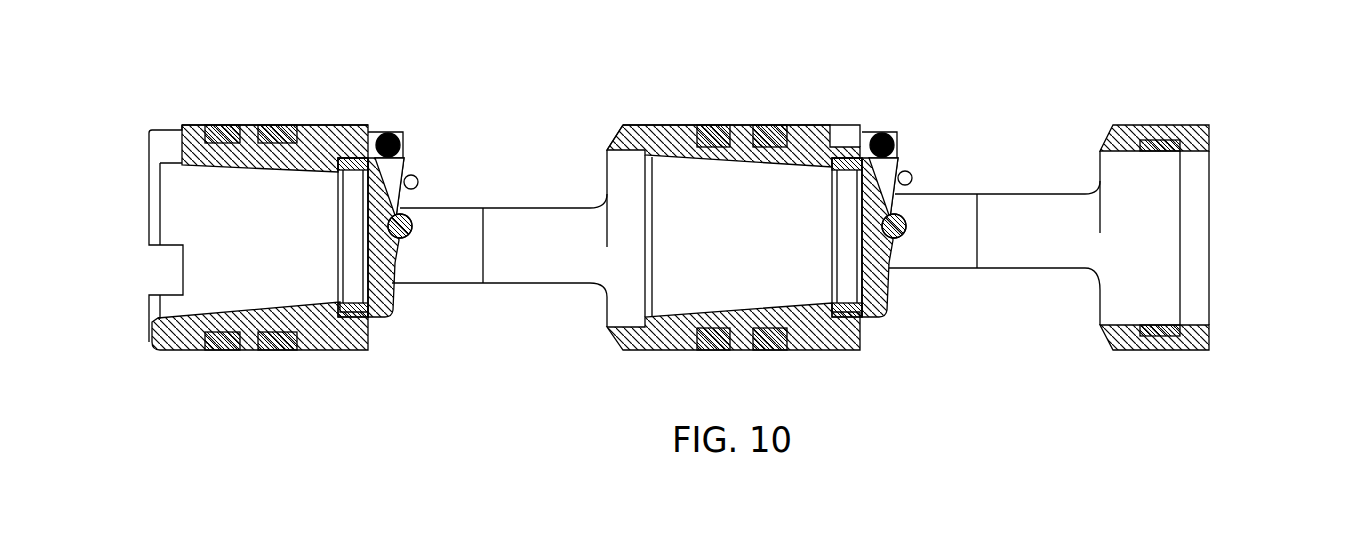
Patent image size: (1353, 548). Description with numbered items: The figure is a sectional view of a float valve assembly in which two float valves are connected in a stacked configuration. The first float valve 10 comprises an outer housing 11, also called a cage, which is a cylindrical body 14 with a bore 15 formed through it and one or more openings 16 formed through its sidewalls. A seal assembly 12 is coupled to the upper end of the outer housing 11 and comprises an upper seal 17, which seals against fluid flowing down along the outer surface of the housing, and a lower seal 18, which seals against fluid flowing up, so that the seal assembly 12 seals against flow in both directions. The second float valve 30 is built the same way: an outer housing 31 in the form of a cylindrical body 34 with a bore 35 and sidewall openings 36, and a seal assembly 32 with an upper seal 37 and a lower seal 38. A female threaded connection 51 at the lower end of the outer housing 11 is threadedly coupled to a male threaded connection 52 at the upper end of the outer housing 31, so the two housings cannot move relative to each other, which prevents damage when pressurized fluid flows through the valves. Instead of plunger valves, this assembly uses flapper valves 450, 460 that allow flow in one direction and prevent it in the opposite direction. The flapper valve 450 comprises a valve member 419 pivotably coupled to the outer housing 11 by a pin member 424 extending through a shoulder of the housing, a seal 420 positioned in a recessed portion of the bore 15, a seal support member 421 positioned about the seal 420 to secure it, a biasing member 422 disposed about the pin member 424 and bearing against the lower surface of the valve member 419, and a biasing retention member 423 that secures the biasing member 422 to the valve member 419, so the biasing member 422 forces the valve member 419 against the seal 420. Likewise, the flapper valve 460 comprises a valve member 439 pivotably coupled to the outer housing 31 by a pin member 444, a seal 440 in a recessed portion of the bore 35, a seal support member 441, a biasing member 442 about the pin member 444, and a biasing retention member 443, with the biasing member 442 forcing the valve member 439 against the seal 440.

The first float valve 10 is at (517, 88).
The outer housing 11 is at (328, 337).
The seal assembly 12 is at (247, 117).
The cylindrical body 14 is at (320, 125).
The bore 15 is at (210, 212).
The openings 16 is at (607, 150).
The upper seal 17 is at (229, 125).
The lower seal 18 is at (268, 125).
The second float valve 30 is at (935, 82).
The outer housing 31 is at (1168, 352).
The seal assembly 32 is at (745, 120).
The cylindrical body 34 is at (1128, 343).
The bore 35 is at (1190, 198).
The openings 36 is at (1107, 137).
The upper seal 37 is at (722, 127).
The lower seal 38 is at (765, 127).
The female threaded connection 51 is at (655, 128).
The male threaded connection 52 is at (668, 150).
The valve member 419 is at (390, 290).
The seal 420 is at (350, 310).
The seal support member 421 is at (370, 333).
The biasing member 422 is at (418, 182).
The biasing retention member 423 is at (410, 225).
The pin member 424 is at (382, 128).
The valve member 439 is at (888, 290).
The seal 440 is at (845, 310).
The seal support member 441 is at (862, 330).
The biasing member 442 is at (893, 143).
The biasing retention member 443 is at (908, 177).
The pin member 444 is at (870, 128).
The flapper valve 450 is at (405, 128).
The flapper valve 460 is at (895, 128).